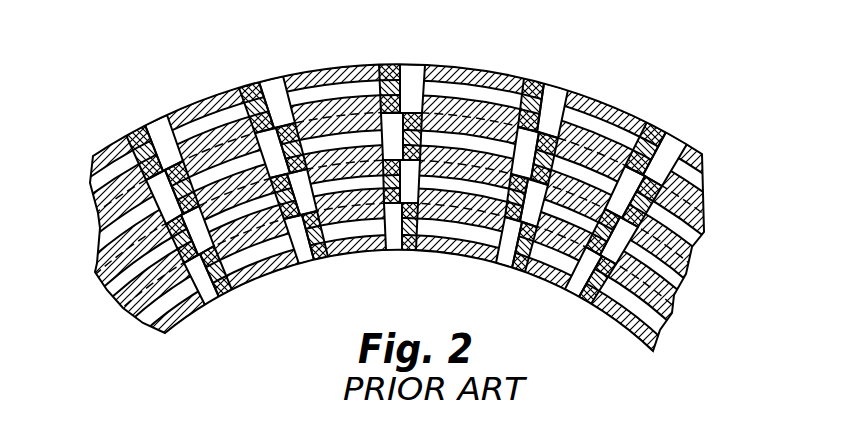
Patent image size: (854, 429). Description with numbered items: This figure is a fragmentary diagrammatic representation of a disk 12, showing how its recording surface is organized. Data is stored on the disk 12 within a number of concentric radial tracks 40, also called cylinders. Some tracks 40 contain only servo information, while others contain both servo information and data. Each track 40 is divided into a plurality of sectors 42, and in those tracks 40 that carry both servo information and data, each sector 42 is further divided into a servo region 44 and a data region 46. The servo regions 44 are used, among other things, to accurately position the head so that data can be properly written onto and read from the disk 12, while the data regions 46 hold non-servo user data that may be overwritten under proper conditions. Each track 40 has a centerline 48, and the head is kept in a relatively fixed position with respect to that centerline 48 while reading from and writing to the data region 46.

The disk 12 is at (406, 184).
The track 40 is at (707, 190).
The sector 42 is at (110, 139).
The servo region 44 is at (205, 310).
The data region 46 is at (239, 291).
The centerline 48 is at (121, 310).